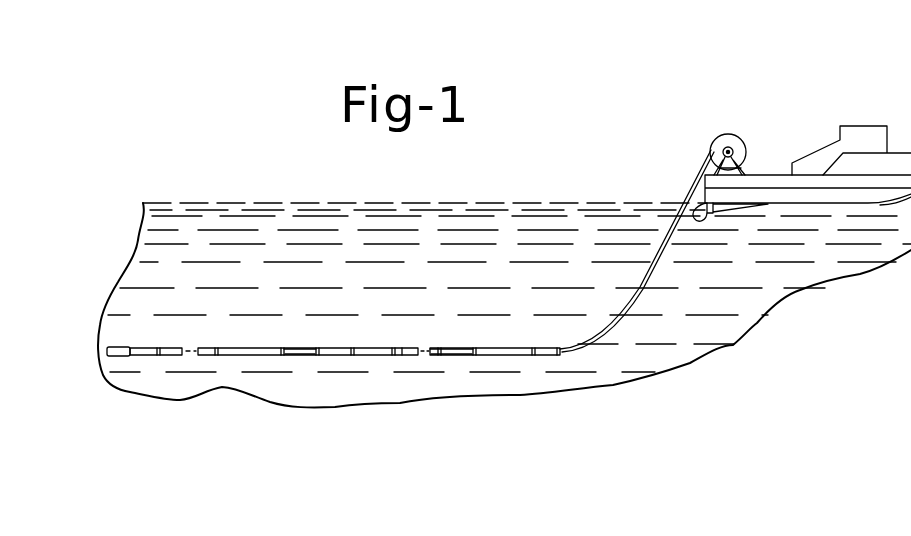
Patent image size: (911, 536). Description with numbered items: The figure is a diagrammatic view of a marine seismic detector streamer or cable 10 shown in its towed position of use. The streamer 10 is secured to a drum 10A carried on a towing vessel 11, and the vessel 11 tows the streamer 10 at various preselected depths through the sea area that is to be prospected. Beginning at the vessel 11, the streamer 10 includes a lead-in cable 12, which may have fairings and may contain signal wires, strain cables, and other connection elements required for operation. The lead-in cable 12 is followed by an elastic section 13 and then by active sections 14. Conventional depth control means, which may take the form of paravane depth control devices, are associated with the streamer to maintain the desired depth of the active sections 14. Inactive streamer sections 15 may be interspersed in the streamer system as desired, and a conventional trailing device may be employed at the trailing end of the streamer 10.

The seismic detector streamer 10 is at (333, 344).
The drum 10A is at (737, 137).
The towing vessel 11 is at (872, 120).
The lead-in cable 12 is at (634, 298).
The elastic section 13 is at (500, 346).
The active sections 14 is at (267, 356).
The inactive streamer sections 15 is at (315, 347).